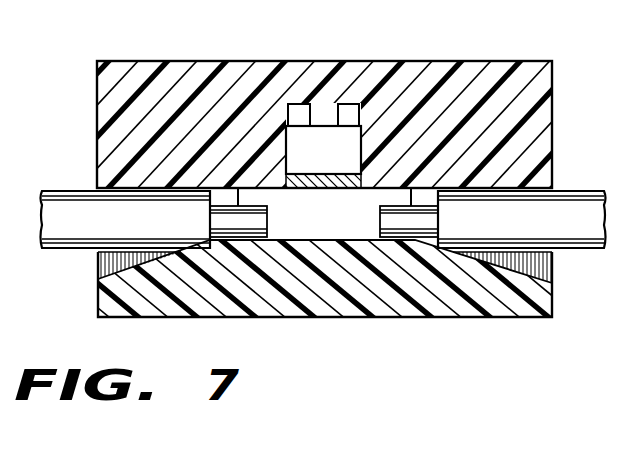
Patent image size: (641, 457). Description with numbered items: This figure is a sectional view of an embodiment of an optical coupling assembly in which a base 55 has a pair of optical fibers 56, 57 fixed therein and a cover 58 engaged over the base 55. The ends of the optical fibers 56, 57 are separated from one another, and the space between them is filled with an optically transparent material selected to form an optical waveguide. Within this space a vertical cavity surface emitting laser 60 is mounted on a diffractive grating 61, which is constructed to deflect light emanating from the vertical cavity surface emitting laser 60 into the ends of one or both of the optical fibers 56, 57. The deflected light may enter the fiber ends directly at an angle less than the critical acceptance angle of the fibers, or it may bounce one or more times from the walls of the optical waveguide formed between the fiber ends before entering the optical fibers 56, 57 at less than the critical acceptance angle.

The base 55 is at (470, 305).
The optical fiber 56 is at (78, 203).
The optical fiber 57 is at (567, 205).
The cover 58 is at (181, 72).
The vertical cavity surface emitting laser (VCSEL) 60 is at (350, 143).
The diffractive grating 61 is at (296, 172).